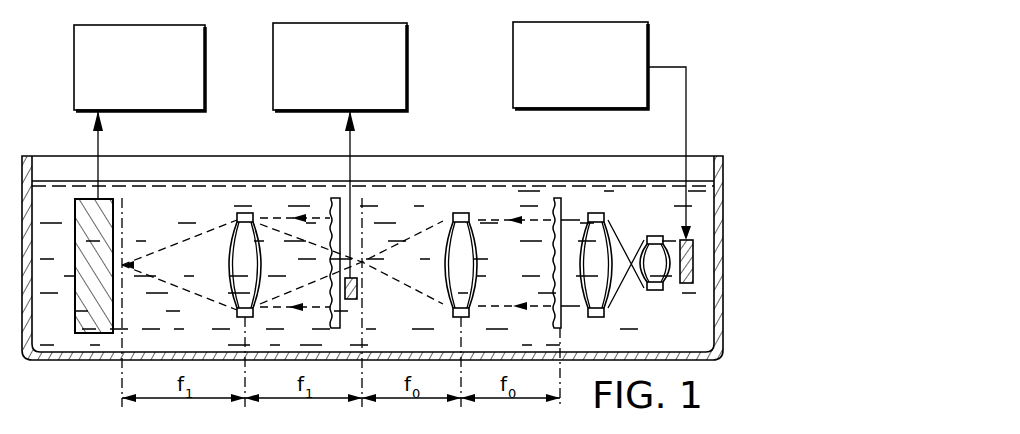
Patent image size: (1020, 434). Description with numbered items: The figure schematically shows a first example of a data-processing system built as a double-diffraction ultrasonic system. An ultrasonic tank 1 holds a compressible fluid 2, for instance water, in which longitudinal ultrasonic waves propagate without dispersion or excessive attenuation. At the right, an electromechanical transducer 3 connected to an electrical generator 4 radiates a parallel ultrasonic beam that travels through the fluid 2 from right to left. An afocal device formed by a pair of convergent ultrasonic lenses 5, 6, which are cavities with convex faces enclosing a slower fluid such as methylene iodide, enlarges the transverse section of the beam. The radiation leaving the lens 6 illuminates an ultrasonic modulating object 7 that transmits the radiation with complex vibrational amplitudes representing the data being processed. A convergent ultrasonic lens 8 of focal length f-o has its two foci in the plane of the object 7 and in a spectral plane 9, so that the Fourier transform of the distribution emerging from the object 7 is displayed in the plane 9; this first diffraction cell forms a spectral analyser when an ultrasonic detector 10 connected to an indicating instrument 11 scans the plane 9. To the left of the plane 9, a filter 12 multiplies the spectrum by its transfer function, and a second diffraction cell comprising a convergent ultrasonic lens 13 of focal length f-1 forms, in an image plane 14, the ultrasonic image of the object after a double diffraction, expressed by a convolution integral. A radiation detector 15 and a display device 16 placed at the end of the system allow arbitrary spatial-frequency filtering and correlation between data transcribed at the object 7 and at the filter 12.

The ultrasonic tank 1 is at (32, 163).
The compressible fluid 2 is at (643, 185).
The electromechanical transducer 3 is at (688, 284).
The electrical generator 4 is at (606, 22).
The convergent ultrasonic lens 5 is at (652, 238).
The convergent ultrasonic lens 6 is at (588, 214).
The ultrasonic modulating object 7 is at (556, 322).
The convergent ultrasonic lens 8 is at (462, 214).
The spectral plane 9 is at (365, 240).
The ultrasonic detector 10 is at (355, 300).
The indicating instrument 11 is at (358, 23).
The filter 12 is at (332, 320).
The convergent ultrasonic lens 13 is at (235, 222).
The image plane 14 is at (124, 292).
The radiation detector 15 is at (75, 292).
The display device 16 is at (170, 24).